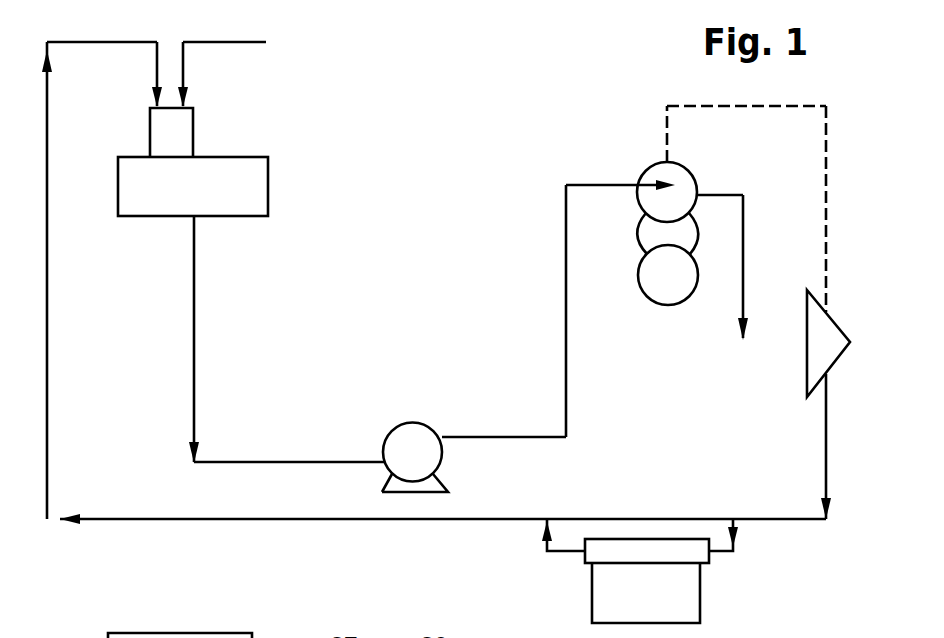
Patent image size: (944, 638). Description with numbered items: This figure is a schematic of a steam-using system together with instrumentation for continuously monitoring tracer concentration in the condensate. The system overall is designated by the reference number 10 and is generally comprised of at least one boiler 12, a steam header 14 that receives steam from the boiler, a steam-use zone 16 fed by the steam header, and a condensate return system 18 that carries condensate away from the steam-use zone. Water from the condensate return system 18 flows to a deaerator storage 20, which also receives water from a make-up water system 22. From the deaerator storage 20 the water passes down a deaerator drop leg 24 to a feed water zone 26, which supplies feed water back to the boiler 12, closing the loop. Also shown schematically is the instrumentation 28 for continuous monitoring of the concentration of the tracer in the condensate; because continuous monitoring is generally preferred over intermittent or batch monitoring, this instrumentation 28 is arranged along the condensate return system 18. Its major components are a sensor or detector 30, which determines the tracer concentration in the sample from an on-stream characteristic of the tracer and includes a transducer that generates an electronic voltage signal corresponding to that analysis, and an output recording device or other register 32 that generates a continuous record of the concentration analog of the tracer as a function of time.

The steam-using system 10 is at (178, 548).
The boiler 12 is at (644, 266).
The steam header 14 is at (667, 106).
The steam-use zone 16 is at (832, 320).
The condensate return system 18 is at (797, 516).
The deaerator storage 20 is at (262, 197).
The make-up water system 22 is at (266, 42).
The deaerator drop leg 24 is at (196, 412).
The feed water zone 26 is at (405, 423).
The instrumentation 28 is at (578, 581).
The sensor or detector 30 is at (704, 556).
The output recording device or register 32 is at (690, 596).